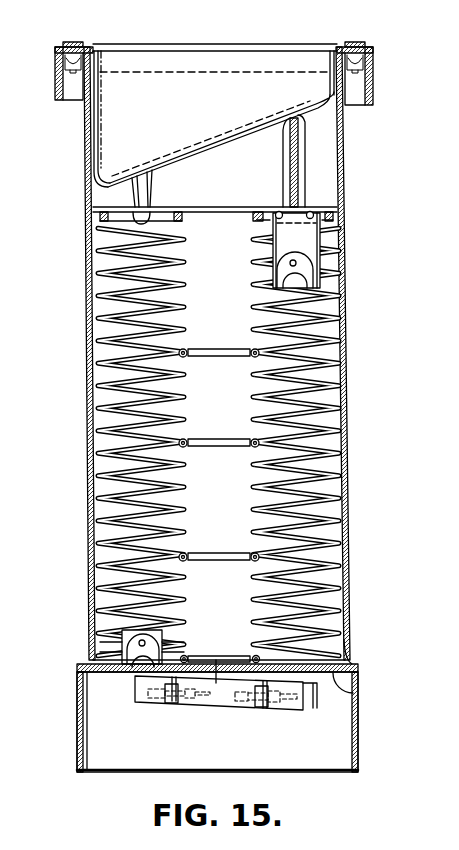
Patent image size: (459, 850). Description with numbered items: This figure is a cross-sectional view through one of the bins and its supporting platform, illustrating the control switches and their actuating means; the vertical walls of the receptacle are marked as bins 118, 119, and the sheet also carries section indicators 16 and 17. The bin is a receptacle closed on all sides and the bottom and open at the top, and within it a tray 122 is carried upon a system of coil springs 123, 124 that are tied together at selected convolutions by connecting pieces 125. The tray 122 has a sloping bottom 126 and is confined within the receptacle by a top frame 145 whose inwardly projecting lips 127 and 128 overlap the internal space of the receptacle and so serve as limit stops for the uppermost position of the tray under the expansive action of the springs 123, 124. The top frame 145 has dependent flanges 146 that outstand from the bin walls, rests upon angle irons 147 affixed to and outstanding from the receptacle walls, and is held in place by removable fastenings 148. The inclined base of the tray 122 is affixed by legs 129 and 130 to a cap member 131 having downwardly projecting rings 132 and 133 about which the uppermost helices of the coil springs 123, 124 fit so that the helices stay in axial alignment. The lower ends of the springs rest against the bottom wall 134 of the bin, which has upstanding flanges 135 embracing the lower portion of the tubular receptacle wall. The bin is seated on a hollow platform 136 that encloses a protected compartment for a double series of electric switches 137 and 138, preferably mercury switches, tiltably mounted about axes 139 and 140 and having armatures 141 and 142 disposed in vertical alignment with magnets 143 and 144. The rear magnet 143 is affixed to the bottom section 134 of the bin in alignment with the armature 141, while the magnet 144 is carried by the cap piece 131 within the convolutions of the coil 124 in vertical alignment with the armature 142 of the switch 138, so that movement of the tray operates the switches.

The section line 16- 16 is at (337, 45).
The section line 17- 17 is at (83, 432).
The bin 118 is at (342, 168).
The bin 119 is at (352, 547).
The tray 122 is at (215, 104).
The coil spring 123 is at (158, 327).
The coil spring 124 is at (253, 329).
The connecting piece 125 is at (218, 445).
The sloping bottom 126 is at (223, 150).
The inwardly projecting lip 127 is at (96, 46).
The inwardly projecting lip 128 is at (333, 46).
The leg 129 is at (153, 193).
The leg 130 is at (289, 158).
The cap member 131 is at (220, 214).
The downwardly projecting ring 132 is at (176, 221).
The downwardly projecting ring 133 is at (257, 223).
The bottom wall 134 is at (357, 665).
The upstanding flange 135 is at (352, 647).
The platform 136 is at (358, 688).
The electric switch 137 is at (168, 705).
The electric switch 138 is at (248, 705).
The axis 139 is at (178, 704).
The axis 140 is at (258, 718).
The armature 141 is at (147, 676).
The armature 142 is at (313, 695).
The magnet 143 is at (133, 668).
The magnet 144 is at (300, 265).
The top frame 145 is at (374, 50).
The dependent flange 146 is at (57, 97).
The angle iron 147 is at (333, 80).
The removable fastening 148 is at (78, 20).